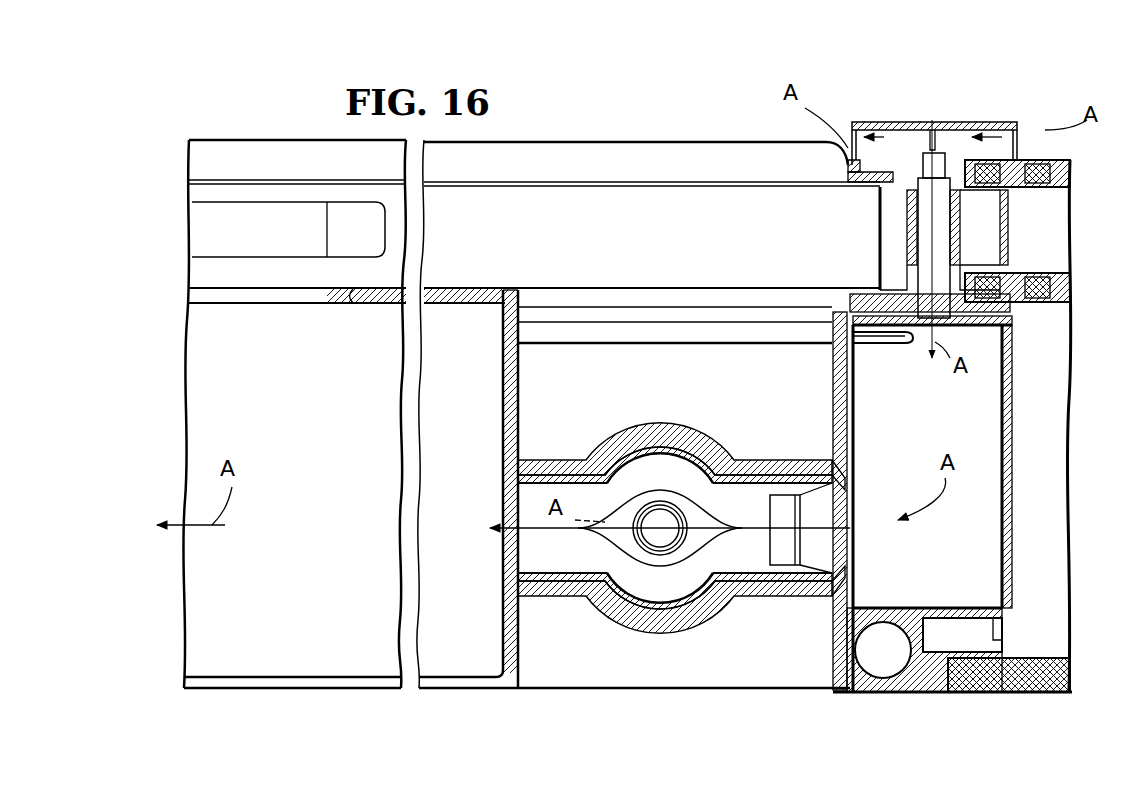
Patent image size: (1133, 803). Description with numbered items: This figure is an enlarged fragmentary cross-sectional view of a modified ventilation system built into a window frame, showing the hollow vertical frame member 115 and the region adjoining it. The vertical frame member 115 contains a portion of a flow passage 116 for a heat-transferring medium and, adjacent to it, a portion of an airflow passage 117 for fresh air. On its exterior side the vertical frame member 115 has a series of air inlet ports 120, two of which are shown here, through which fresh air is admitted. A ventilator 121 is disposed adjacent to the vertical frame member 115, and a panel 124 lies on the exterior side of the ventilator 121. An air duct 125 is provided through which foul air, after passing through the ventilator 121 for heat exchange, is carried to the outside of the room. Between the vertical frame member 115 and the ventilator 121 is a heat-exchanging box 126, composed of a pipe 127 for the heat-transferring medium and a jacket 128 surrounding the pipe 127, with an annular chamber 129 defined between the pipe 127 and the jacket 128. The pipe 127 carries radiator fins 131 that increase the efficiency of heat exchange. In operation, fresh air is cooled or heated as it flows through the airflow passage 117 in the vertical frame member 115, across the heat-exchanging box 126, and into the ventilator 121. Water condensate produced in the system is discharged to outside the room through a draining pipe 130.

The vertical frame member 115 is at (1015, 420).
The flow passage 116 is at (883, 660).
The airflow passage 117 is at (972, 532).
The air inlet ports 120 is at (850, 130).
The ventilator 121 is at (290, 642).
The panel 124 is at (598, 180).
The air duct 125 is at (257, 212).
The heat-exchanging box 126 is at (708, 426).
The pipe 127 is at (652, 548).
The jacket 128 is at (632, 445).
The annular chamber 129 is at (690, 592).
The draining pipe 130 is at (704, 335).
The radiator fins 131 is at (610, 530).